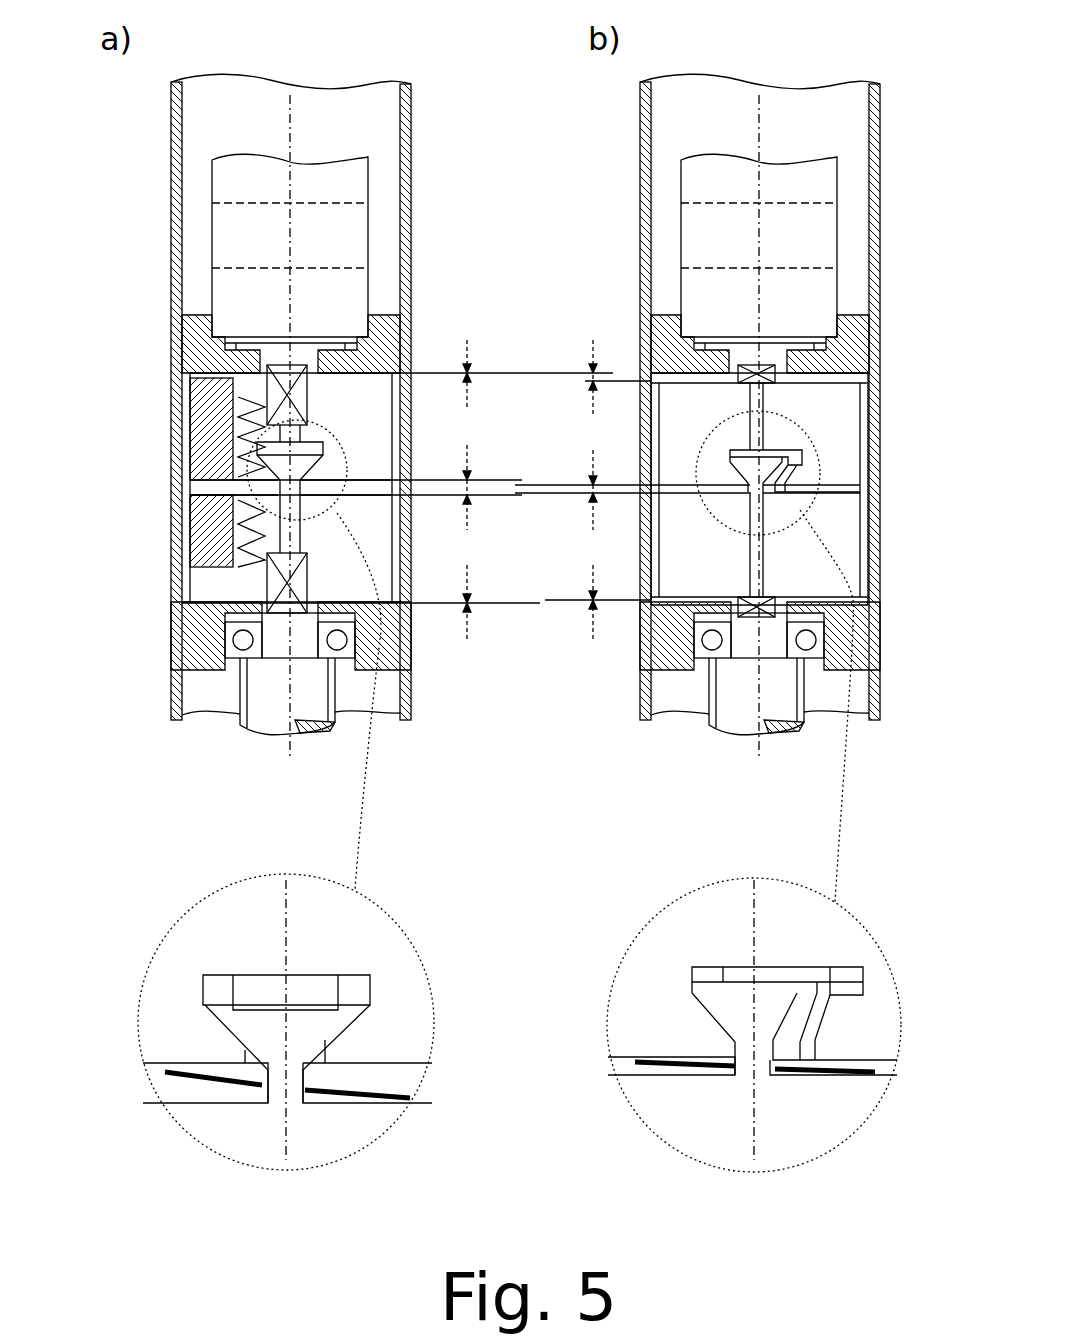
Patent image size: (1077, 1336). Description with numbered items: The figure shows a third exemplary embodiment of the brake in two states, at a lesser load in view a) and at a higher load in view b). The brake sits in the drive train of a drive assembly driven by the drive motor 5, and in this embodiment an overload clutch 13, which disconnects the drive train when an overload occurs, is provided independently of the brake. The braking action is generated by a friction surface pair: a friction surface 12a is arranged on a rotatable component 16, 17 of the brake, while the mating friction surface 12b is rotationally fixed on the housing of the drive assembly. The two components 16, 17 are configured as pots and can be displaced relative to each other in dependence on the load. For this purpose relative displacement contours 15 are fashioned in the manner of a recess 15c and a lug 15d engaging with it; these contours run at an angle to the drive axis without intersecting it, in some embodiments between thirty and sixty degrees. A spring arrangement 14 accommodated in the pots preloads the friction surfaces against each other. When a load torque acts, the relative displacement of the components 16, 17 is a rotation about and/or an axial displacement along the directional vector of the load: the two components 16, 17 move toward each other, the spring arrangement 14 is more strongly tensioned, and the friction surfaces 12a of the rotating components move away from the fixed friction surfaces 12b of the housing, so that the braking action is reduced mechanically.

The drive motor 5 is at (322, 185).
The friction surface 12a is at (195, 385).
The friction surface 12b is at (197, 356).
The overload clutch 13 is at (345, 310).
The spring arrangement 14 is at (243, 530).
The relative displacement contours 15 is at (750, 482).
The recess 15c is at (800, 452).
The lug 15d is at (790, 470).
The component 16 is at (681, 407).
The component 17 is at (843, 543).